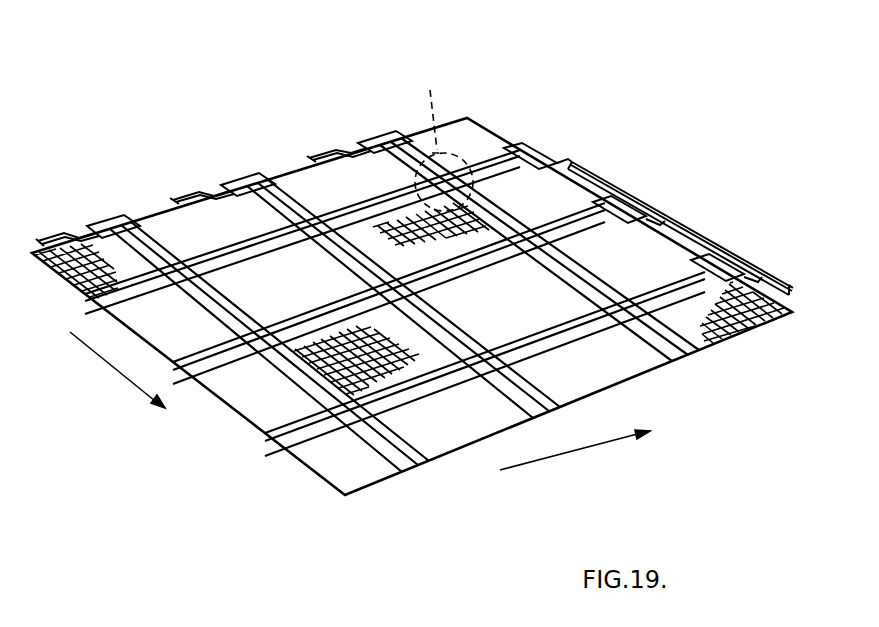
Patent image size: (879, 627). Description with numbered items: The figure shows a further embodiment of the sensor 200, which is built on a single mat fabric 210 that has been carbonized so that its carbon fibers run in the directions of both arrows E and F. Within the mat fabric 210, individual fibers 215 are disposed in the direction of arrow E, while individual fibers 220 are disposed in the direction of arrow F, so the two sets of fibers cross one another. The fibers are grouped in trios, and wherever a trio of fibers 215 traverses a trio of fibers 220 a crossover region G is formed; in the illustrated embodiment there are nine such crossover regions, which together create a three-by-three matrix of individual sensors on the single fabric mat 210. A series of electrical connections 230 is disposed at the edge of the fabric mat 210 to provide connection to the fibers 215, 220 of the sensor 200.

The sensor 200 is at (491, 102).
The mat fabric 210 is at (735, 340).
The individual fibers 215 is at (623, 283).
The individual fibers 220 is at (205, 252).
The electrical connections 230 is at (113, 222).